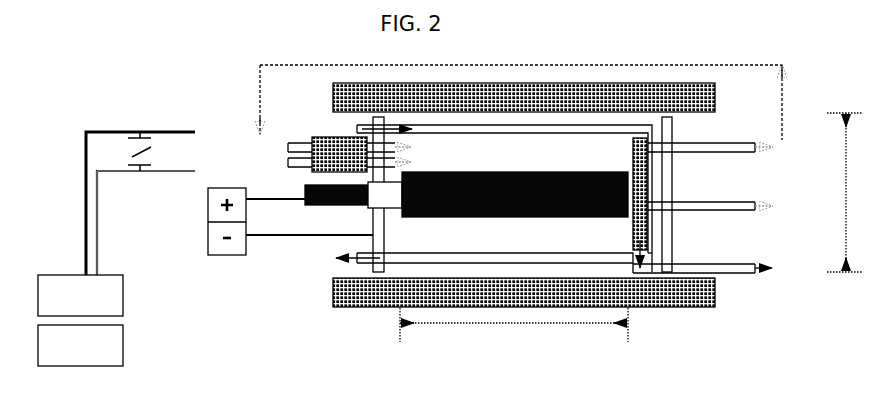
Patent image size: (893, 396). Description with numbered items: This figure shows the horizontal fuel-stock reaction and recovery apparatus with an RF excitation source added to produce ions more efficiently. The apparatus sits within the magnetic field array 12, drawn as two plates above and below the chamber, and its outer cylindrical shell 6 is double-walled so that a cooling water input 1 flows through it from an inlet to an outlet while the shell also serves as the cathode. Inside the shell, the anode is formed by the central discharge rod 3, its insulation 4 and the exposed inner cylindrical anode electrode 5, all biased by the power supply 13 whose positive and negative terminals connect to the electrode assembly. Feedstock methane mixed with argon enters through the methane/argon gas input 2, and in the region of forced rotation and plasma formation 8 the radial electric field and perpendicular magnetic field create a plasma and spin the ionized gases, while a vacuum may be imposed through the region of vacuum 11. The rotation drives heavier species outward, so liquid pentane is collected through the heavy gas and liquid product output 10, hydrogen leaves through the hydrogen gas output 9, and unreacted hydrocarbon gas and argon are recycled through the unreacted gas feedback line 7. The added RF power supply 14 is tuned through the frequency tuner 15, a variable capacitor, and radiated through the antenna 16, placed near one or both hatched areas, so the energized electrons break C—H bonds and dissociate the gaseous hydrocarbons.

The cooling water input 1 is at (358, 130).
The methane/argon gas input 2 is at (288, 163).
The central discharge rod 3 is at (336, 195).
The central discharge rod insulation 4 is at (385, 195).
The inner cylindrical anode electrode 5 is at (515, 194).
The external discharge shell 6 is at (386, 194).
The unreacted gas feedback line 7 is at (288, 147).
The region of forced rotation and plasma formation 8 is at (514, 328).
The hydrogen gas output 9 is at (717, 206).
The heavy gas and liquid product output 10 is at (714, 268).
The region of vacuum 11 is at (843, 192).
The magnetic field array 12 is at (524, 195).
The power supply 13 is at (290, 233).
The RF amplifier 14 is at (80, 345).
The frequency tuner 15 is at (80, 295).
The antenna 16 is at (127, 203).